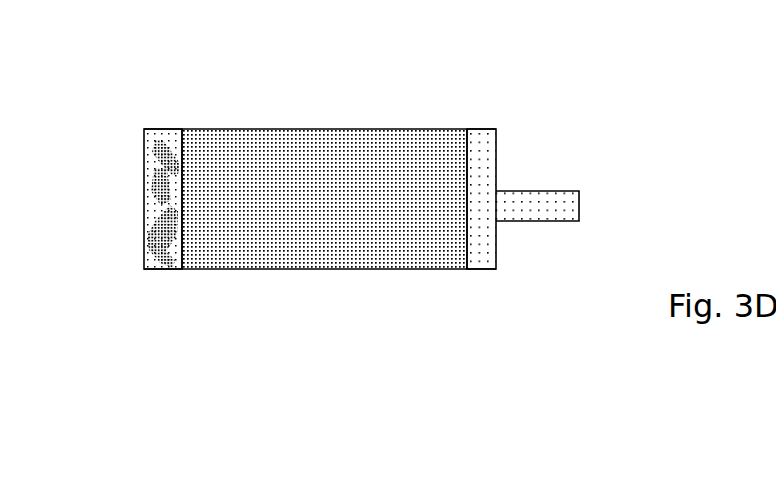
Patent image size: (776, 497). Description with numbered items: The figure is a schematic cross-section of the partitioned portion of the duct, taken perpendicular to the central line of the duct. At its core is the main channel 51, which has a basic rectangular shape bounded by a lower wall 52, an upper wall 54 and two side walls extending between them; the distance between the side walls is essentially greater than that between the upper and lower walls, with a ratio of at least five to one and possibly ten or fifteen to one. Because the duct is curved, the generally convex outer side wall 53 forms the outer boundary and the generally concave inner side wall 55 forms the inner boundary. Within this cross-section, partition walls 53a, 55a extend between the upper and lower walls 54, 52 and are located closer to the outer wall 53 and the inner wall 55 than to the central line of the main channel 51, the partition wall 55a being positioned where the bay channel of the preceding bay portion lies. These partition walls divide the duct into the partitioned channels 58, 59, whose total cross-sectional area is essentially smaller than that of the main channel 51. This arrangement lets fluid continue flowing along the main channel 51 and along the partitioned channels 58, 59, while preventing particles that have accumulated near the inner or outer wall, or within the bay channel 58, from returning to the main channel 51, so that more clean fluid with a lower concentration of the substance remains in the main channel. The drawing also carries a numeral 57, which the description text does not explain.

The main channel 51 is at (327, 195).
The lower wall 52 is at (322, 269).
The outer side wall 53 is at (145, 193).
The partition wall 53a is at (183, 163).
The upper wall 54 is at (343, 129).
The inner side wall 55 is at (497, 157).
The partition wall 55a is at (467, 163).
The tab 57 is at (580, 197).
The partitioned channel 58 is at (542, 205).
The partitioned channel 59 is at (162, 240).